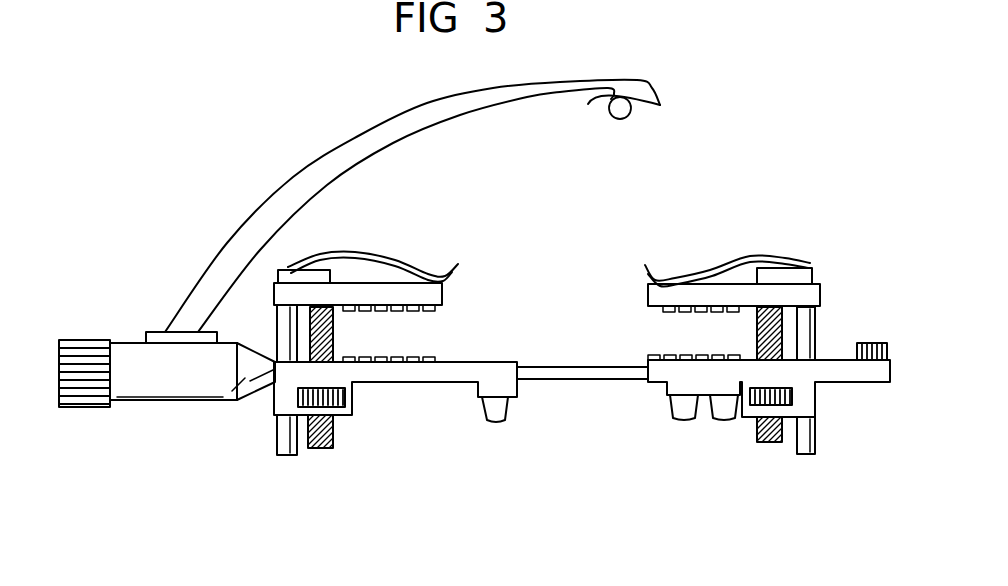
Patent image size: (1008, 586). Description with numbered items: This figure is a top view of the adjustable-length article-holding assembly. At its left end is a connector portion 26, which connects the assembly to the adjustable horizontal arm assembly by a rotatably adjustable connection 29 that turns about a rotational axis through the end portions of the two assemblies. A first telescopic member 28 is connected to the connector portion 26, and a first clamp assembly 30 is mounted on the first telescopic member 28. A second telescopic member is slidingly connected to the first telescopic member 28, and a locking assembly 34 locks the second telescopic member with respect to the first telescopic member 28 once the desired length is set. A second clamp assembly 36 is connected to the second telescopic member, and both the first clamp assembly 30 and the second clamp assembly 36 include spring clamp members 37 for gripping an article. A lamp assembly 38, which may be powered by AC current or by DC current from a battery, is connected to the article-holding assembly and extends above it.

The connector portion 26 is at (247, 378).
The first telescopic member 28 is at (458, 370).
The rotatably adjustable connection 29 is at (130, 384).
The first clamp assembly 30 is at (458, 334).
The locking assembly 34 is at (500, 415).
The second clamp assembly 36 is at (685, 336).
The leaf spring 37 is at (450, 268).
The lamp assembly 38 is at (475, 103).